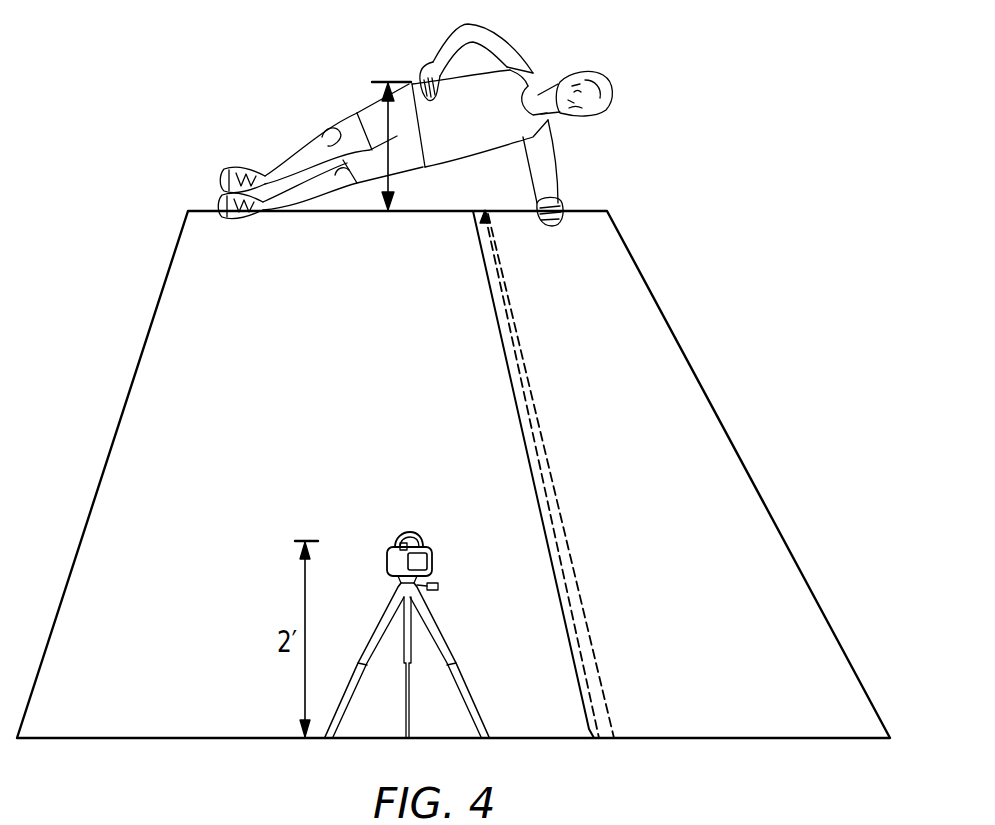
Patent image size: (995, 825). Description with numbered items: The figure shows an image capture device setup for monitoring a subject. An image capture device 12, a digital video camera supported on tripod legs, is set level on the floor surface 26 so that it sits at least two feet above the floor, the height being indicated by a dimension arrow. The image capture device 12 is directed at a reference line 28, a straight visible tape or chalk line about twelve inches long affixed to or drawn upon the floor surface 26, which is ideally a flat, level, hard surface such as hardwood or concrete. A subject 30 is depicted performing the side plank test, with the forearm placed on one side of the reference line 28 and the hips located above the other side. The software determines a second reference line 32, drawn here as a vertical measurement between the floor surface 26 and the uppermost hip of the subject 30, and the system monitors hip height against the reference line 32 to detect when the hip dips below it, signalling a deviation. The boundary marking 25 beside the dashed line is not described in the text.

The image capture device 12 is at (413, 530).
The boundary line 25 is at (513, 388).
The floor surface 26 is at (168, 423).
The reference line 28 is at (508, 213).
The subject 30 is at (522, 53).
The reference line 32 is at (388, 110).